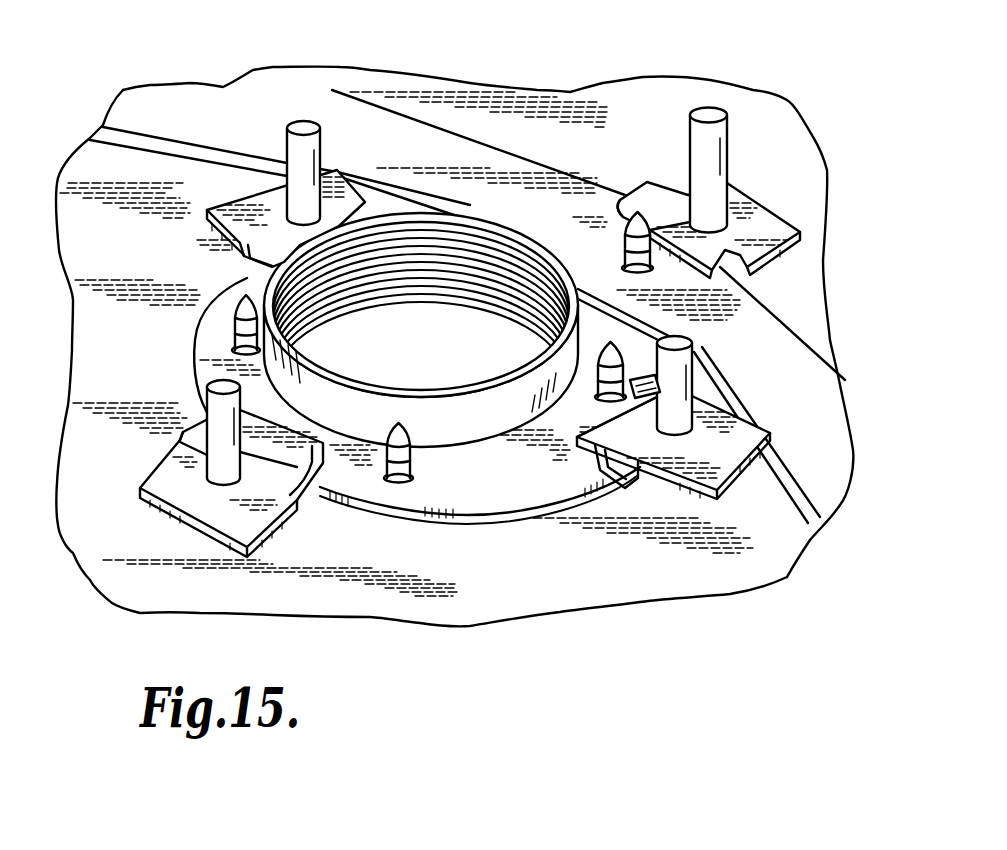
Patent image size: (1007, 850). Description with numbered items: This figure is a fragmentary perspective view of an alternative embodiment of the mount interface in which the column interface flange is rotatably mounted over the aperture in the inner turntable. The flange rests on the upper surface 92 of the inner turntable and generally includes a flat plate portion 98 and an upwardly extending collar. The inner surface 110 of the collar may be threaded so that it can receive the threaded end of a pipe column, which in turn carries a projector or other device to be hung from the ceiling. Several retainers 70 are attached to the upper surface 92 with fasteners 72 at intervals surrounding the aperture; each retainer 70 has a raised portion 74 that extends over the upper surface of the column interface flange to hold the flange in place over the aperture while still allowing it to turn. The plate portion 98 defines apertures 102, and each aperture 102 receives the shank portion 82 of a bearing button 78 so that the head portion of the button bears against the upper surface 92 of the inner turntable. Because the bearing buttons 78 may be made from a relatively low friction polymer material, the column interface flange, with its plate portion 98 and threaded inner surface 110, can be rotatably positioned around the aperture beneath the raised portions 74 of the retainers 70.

The retainer 70 is at (217, 168).
The fastener 72 is at (330, 135).
The raised portion 74 is at (325, 197).
The bearing button 78 is at (623, 373).
The shank portion 82 is at (623, 400).
The upper surface 92 is at (690, 567).
The plate portion 98 is at (733, 292).
The aperture 102 is at (690, 348).
The inner surface 110 is at (479, 487).